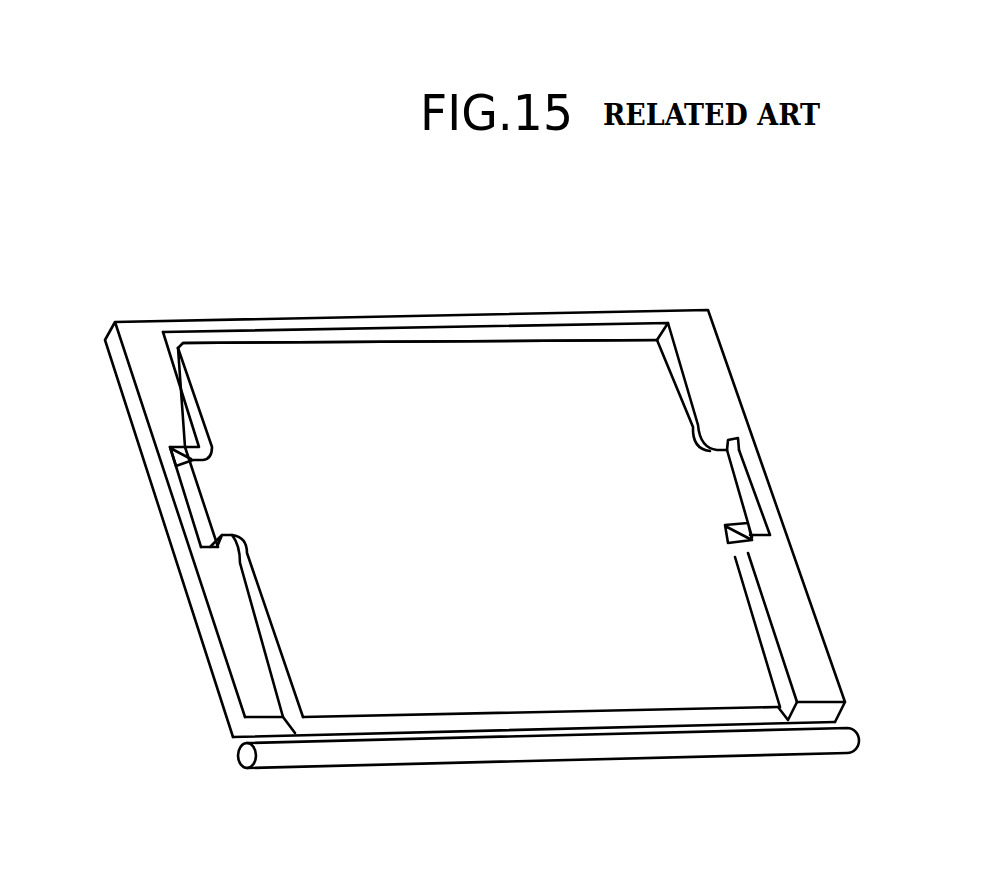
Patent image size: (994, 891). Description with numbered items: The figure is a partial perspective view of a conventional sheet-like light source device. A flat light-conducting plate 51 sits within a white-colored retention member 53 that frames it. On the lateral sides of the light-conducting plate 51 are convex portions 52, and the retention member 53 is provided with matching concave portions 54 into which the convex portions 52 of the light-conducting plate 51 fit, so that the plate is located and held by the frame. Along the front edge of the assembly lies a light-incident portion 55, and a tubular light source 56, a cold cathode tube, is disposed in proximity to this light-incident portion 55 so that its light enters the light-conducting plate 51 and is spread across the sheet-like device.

The light-conducting plate 51 is at (498, 378).
The convex portions 52 is at (222, 519).
The white-colored retention member 53 is at (712, 378).
The concave portions 54 is at (193, 504).
The light-incident portion 55 is at (518, 721).
The tubular light source 56 is at (658, 743).